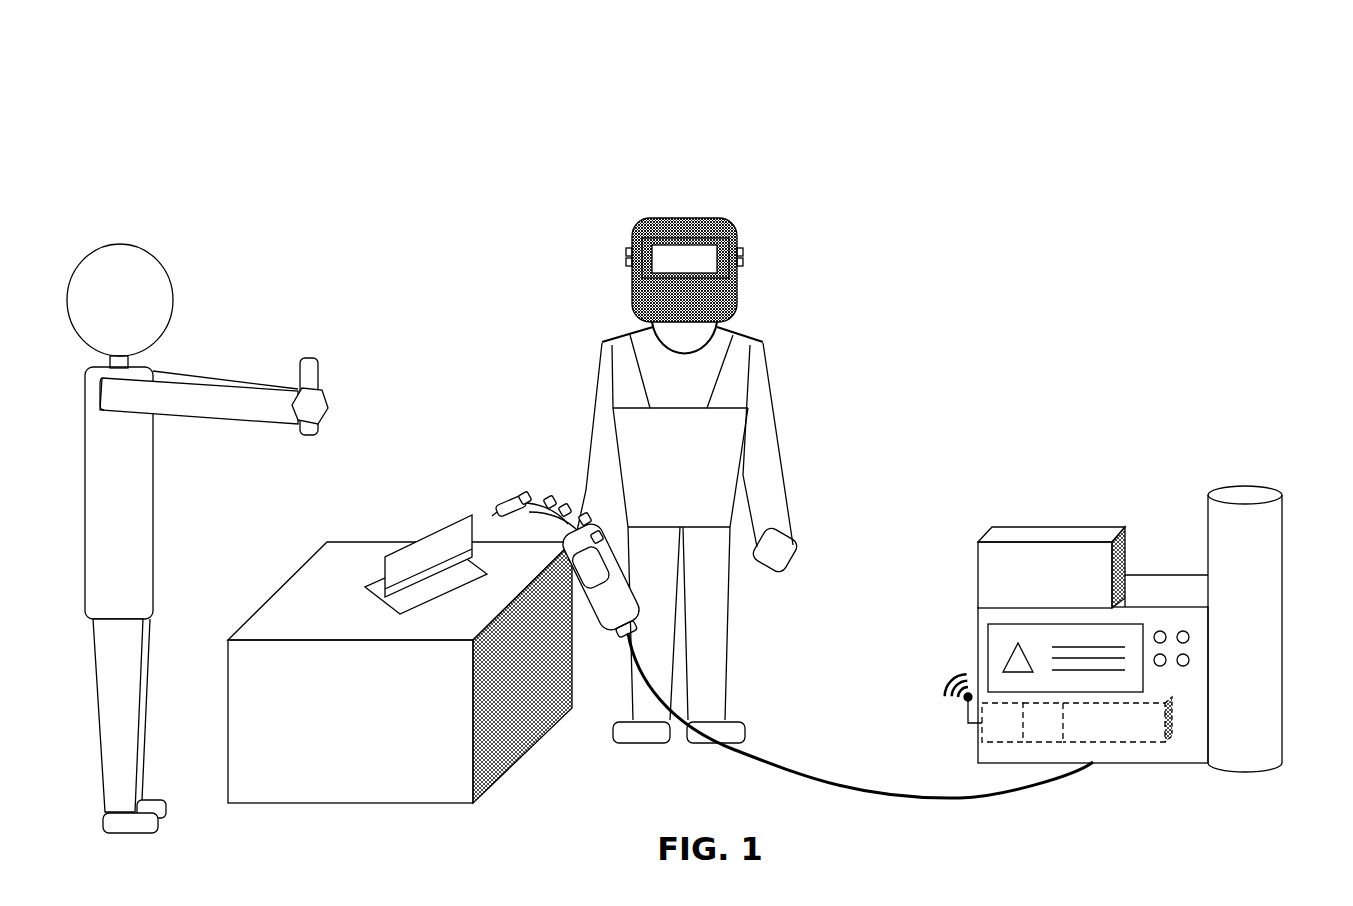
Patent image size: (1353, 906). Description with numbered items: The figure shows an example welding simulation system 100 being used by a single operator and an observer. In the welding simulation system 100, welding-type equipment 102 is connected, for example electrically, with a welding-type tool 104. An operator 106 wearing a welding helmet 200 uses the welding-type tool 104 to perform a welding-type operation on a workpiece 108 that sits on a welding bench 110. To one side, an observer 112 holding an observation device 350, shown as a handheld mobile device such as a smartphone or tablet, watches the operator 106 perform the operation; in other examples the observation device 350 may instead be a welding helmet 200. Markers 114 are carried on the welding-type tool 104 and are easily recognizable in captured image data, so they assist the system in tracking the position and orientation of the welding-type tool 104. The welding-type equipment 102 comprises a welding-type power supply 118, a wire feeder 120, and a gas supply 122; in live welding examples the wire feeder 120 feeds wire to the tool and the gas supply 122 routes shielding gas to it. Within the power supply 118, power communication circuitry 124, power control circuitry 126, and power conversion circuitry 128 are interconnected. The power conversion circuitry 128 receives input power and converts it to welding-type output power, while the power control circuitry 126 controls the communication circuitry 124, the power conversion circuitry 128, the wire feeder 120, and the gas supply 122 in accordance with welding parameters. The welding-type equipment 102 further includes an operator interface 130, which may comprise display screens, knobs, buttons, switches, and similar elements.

The welding simulation system 100 is at (122, 115).
The welding-type equipment 102 is at (1288, 630).
The welding-type tool 104 is at (600, 626).
The operator 106 is at (571, 350).
The workpiece 108 is at (429, 528).
The welding bench 110 is at (329, 738).
The observer 112 is at (121, 240).
The markers 114 is at (568, 500).
The welding-type power supply 118 is at (978, 637).
The wire feeder 120 is at (1023, 590).
The gas supply 122 is at (1224, 645).
The power communication circuitry 124 is at (998, 745).
The power control circuitry 126 is at (1045, 745).
The power conversion circuitry 128 is at (1113, 745).
The operator interface 130 is at (1143, 622).
The welding helmet 200 is at (683, 215).
The observation device 350 is at (303, 353).